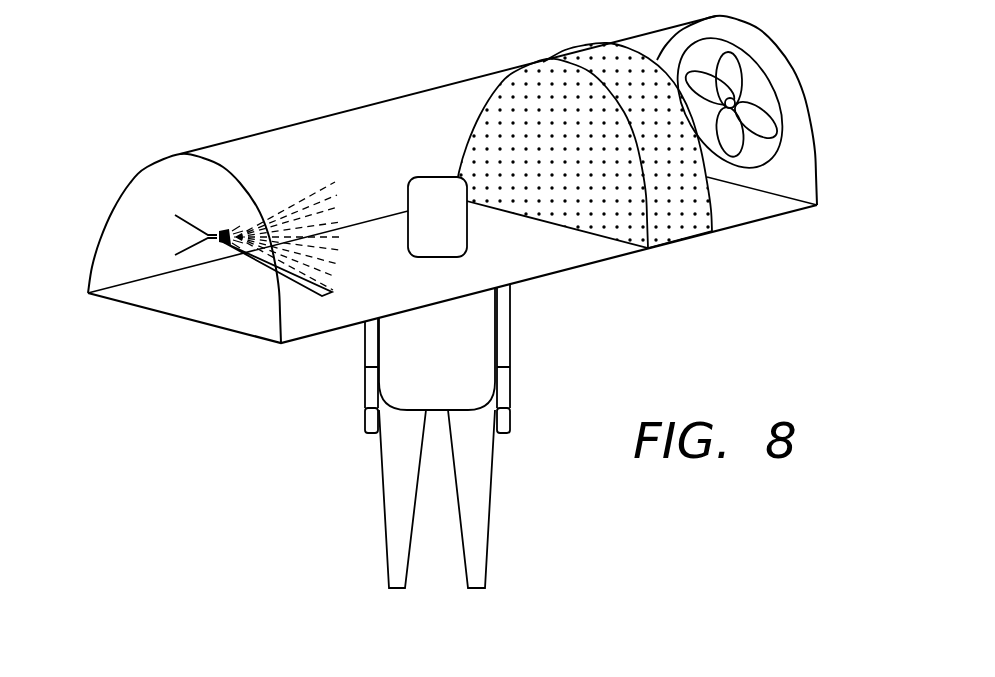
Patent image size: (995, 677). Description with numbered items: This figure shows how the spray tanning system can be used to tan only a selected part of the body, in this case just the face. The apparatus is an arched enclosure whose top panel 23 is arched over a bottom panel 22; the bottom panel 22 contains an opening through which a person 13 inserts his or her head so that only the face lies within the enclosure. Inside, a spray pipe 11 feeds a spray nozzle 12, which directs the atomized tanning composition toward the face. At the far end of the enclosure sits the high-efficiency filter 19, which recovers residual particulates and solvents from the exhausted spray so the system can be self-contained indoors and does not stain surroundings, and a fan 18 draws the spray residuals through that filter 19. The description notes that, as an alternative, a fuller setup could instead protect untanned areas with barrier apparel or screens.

The spray pipe 11 is at (184, 249).
The spray nozzle 12 is at (279, 239).
The person 13 is at (393, 468).
The fan 18 is at (743, 160).
The high-efficiency filter 19 is at (668, 229).
The bottom panel 22 is at (372, 295).
The top panel 23 is at (325, 127).